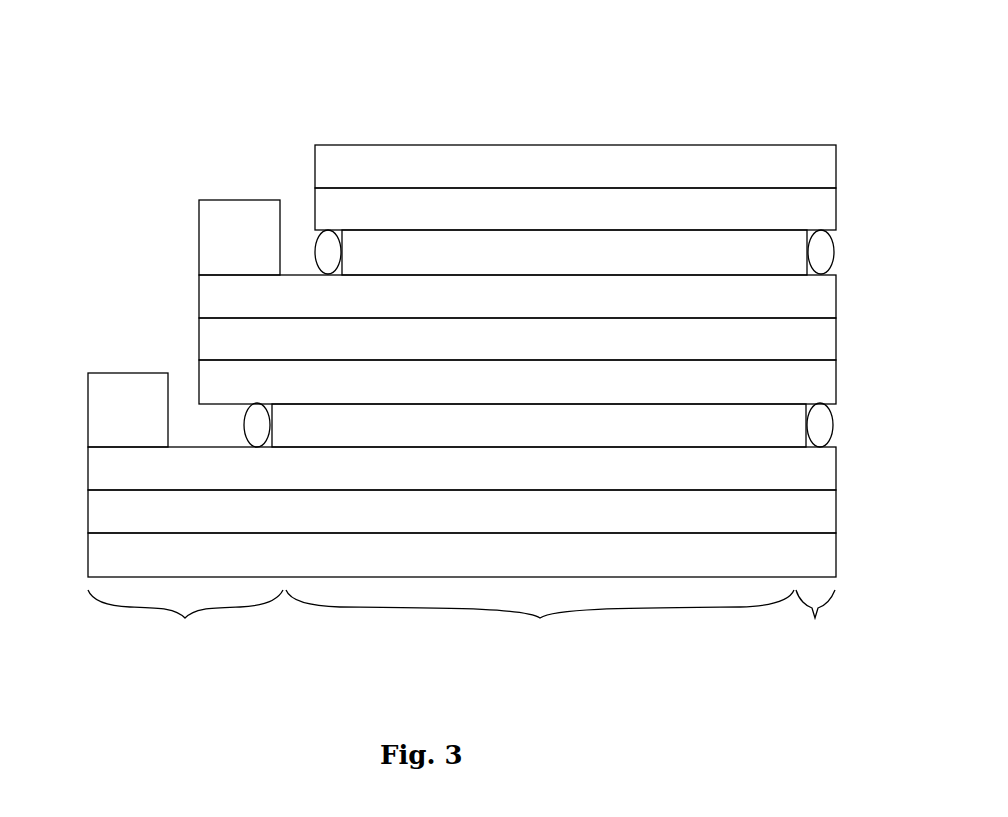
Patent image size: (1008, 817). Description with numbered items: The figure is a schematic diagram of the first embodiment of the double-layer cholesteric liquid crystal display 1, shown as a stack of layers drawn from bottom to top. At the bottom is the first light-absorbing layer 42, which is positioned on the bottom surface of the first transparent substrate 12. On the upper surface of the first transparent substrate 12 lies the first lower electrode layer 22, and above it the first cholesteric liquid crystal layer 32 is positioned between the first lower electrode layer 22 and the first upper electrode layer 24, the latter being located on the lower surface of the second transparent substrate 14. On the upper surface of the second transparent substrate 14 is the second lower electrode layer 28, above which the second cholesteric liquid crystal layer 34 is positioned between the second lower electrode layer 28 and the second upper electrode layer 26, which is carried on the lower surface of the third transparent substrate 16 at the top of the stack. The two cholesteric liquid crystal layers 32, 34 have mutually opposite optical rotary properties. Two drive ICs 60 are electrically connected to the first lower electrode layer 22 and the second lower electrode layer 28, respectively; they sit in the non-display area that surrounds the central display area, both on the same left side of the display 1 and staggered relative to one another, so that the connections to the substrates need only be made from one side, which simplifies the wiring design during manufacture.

The double-layer cholesteric liquid crystal display 1 is at (100, 124).
The first transparent substrate 12 is at (818, 515).
The second transparent substrate 14 is at (815, 338).
The third transparent substrate 16 is at (815, 173).
The first lower electrode layer 22 is at (818, 472).
The first upper electrode layer 24 is at (815, 380).
The second upper electrode layer 26 is at (815, 216).
The second lower electrode layer 28 is at (815, 300).
The first cholesteric liquid crystal layer 32 is at (800, 431).
The second cholesteric liquid crystal layer 34 is at (803, 257).
The first light-absorbing layer 42 is at (818, 563).
The drive IC 60 is at (213, 262).